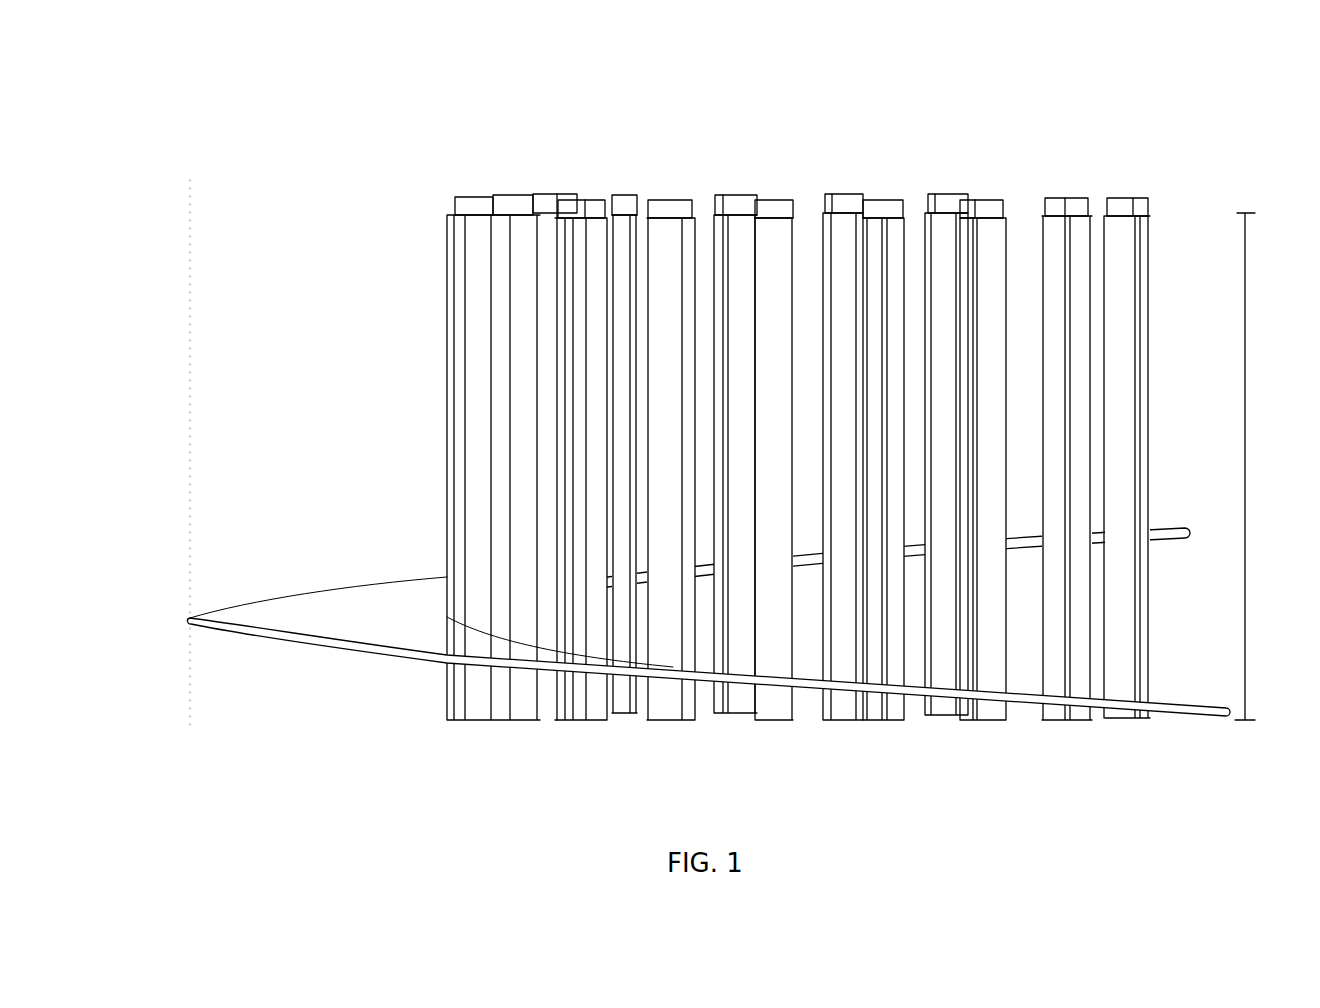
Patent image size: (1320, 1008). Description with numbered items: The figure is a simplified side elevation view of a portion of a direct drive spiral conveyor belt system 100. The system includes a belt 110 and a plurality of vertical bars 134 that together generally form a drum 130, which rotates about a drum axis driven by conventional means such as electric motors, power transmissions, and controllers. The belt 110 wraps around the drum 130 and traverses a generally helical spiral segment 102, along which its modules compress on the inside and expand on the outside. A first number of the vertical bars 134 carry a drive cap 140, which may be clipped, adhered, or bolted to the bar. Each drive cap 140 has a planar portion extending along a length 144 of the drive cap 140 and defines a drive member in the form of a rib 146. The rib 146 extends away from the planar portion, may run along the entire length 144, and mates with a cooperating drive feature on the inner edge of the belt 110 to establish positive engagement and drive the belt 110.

The direct drive spiral conveyor belt system 100 is at (524, 157).
The helical spiral segment 102 is at (325, 372).
The belt 110 is at (298, 608).
The drum 130 is at (404, 270).
The vertical bars 134 is at (887, 203).
The drive cap 140 is at (905, 226).
The length 144 is at (1246, 437).
The rib 146 is at (885, 255).